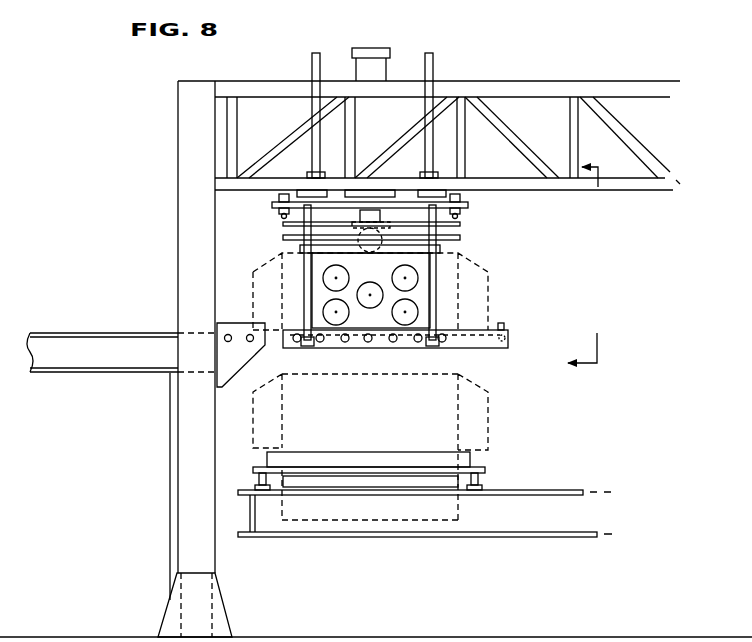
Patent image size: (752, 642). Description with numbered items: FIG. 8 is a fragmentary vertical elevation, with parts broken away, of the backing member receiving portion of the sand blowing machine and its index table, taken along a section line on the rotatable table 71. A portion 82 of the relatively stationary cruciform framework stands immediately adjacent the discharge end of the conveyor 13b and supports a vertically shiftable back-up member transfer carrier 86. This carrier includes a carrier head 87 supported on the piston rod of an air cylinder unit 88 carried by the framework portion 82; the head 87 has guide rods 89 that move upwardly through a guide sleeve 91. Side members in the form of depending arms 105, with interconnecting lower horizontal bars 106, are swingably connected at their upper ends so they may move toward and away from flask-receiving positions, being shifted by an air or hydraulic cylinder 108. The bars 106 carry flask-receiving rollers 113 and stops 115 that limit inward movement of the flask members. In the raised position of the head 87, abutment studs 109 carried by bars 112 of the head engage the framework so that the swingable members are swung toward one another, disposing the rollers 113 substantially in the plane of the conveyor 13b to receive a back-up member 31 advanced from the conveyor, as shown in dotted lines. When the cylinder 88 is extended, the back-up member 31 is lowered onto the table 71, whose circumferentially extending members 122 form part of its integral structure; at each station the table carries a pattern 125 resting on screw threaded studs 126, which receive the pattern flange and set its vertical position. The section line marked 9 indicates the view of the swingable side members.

The framework portion 82 is at (616, 78).
The conveyor 13b is at (100, 330).
The air cylinder unit 88 is at (382, 46).
The guide rods 89 is at (312, 63).
The guide sleeve 91 is at (315, 174).
The abutment studs 109 is at (283, 194).
The bars 112 is at (272, 205).
The carrier head 87 is at (304, 233).
The back-up member transfer carrier 86 is at (462, 239).
The air or hydraulic cylinder 108 is at (373, 252).
The back-up member 31 is at (496, 290).
The depending arms 105 is at (298, 263).
The stops 115 is at (504, 326).
The lower horizontal bars 106 is at (473, 333).
The flask-receiving rollers 113 is at (413, 342).
The section line 9 is at (577, 254).
The circumferentially extending members 122 is at (338, 524).
The pattern 125 is at (483, 460).
The screw threaded studs 126 is at (258, 478).
The rotatable table 71 is at (503, 538).